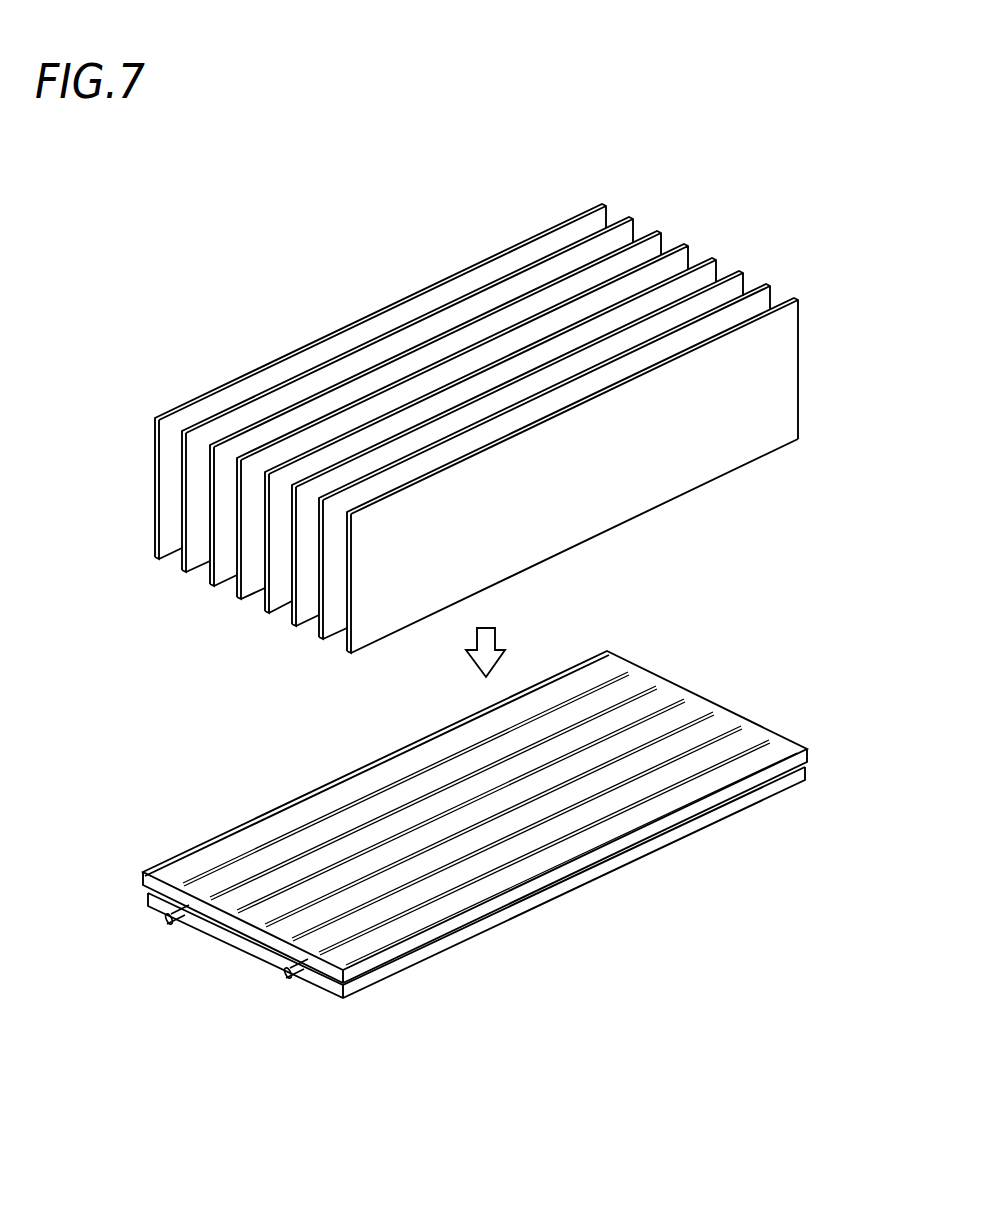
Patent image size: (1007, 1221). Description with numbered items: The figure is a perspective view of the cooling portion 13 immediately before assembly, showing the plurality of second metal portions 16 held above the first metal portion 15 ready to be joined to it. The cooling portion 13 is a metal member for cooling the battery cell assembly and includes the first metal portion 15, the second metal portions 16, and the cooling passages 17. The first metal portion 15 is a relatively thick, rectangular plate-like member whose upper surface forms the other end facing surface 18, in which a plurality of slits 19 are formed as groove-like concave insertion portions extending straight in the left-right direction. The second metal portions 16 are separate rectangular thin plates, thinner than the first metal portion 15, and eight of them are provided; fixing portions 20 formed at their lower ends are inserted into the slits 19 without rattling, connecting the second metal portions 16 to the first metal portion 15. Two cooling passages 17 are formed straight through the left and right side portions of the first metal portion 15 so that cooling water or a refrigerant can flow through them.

The cooling portion 13 is at (171, 309).
The first metal portion 15 is at (603, 852).
The second metal portion 16 is at (393, 353).
The cooling passage 17 is at (293, 983).
The other end facing surface 18 is at (288, 820).
The slit 19 is at (452, 778).
The fixing portion 20 is at (228, 582).